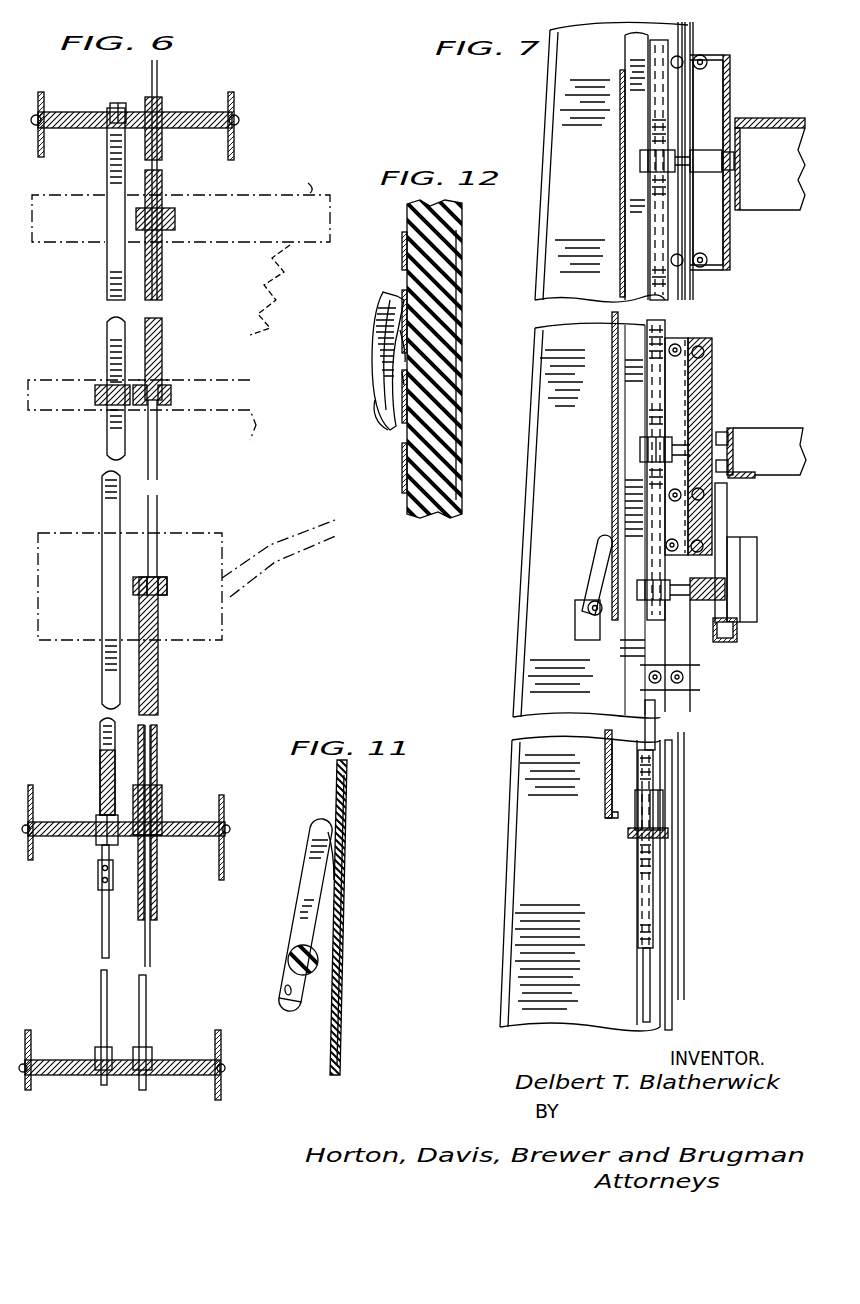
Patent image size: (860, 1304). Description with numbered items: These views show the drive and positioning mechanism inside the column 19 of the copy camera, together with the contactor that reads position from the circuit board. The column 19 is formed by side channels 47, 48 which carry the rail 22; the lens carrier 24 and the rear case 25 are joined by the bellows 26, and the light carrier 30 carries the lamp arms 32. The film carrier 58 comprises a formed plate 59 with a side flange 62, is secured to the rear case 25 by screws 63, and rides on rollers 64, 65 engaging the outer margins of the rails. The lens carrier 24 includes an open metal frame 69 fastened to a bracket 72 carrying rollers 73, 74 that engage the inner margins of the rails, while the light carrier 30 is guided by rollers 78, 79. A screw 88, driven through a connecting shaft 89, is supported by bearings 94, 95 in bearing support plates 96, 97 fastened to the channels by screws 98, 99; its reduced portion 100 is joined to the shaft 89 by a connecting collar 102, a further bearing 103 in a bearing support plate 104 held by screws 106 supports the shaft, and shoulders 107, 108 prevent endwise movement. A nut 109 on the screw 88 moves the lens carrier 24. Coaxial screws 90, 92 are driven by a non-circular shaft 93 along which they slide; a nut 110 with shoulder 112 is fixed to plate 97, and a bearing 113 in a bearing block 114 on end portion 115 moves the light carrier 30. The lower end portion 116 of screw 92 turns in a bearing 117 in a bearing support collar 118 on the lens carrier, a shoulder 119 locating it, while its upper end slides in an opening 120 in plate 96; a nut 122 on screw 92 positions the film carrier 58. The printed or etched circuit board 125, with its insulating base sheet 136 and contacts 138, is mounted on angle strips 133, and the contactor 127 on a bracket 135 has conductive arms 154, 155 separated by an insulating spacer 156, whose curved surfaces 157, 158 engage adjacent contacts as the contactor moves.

In FIG. 7, the column 19 is at (680, 945).
In FIG. 7, the rail 22 is at (692, 40).
In FIG. 6, the lens carrier 24 is at (155, 412).
In FIG. 7, the lens carrier 24 is at (733, 410).
In FIG. 6, the rear case 25 is at (181, 207).
In FIG. 7, the rear case 25 is at (772, 118).
In FIG. 6, the bellows 26 is at (282, 290).
In FIG. 6, the light carrier 30 is at (230, 603).
In FIG. 7, the light carrier 30 is at (705, 662).
In FIG. 6, the arms 32 is at (325, 528).
In FIG. 7, the arms 32 is at (758, 592).
In FIG. 6, the side channel 47 is at (236, 100).
In FIG. 7, the side channel 47 is at (532, 778).
In FIG. 6, the side channel 48 is at (44, 100).
In FIG. 7, the film carrier 58 is at (732, 238).
In FIG. 7, the formed plate 59 is at (732, 90).
In FIG. 7, the side flange 62 is at (707, 245).
In FIG. 7, the screws 63 is at (736, 163).
In FIG. 7, the rollers 64 is at (708, 60).
In FIG. 7, the rollers 65 is at (695, 285).
In FIG. 7, the open metal frame 69 is at (780, 440).
In FIG. 7, the bracket 72 is at (710, 365).
In FIG. 7, the rollers 73 is at (700, 345).
In FIG. 7, the rollers 74 is at (690, 322).
In FIG. 7, the rollers 78 is at (680, 700).
In FIG. 7, the rollers 79 is at (684, 677).
In FIG. 6, the screw 88 is at (104, 488).
In FIG. 6, the connecting shaft 89 is at (101, 980).
In FIG. 6, the screw 90 is at (158, 745).
In FIG. 7, the screw 90 is at (638, 908).
In FIG. 6, the screw 92 is at (163, 265).
In FIG. 7, the screw 92 is at (650, 212).
In FIG. 6, the shaft 93 is at (148, 985).
In FIG. 7, the shaft 93 is at (643, 993).
In FIG. 6, the bearing 94 is at (112, 106).
In FIG. 6, the bearing 95 is at (97, 822).
In FIG. 6, the bearing support plate 96 is at (182, 118).
In FIG. 6, the bearing support plate 97 is at (60, 822).
In FIG. 7, the bearing support plate 97 is at (636, 830).
In FIG. 6, the screws 98 is at (36, 116).
In FIG. 6, the screws 99 is at (30, 800).
In FIG. 6, the portion of reduced section 100 is at (102, 851).
In FIG. 6, the connecting collar 102 is at (98, 880).
In FIG. 6, the bearing 103 is at (112, 1050).
In FIG. 6, the bearing support plate 104 is at (62, 1060).
In FIG. 6, the screws 106 is at (225, 1066).
In FIG. 6, the shoulder 107 is at (108, 140).
In FIG. 6, the shoulder 108 is at (100, 790).
In FIG. 6, the nut 109 is at (96, 400).
In FIG. 7, the nut 109 is at (640, 450).
In FIG. 6, the nut 110 is at (163, 795).
In FIG. 7, the nut 110 is at (636, 812).
In FIG. 6, the shoulder 112 is at (163, 833).
In FIG. 6, the bearing 113 is at (152, 580).
In FIG. 6, the bearing block 114 is at (168, 588).
In FIG. 7, the bearing block 114 is at (638, 600).
In FIG. 6, the end portion 115 is at (167, 596).
In FIG. 6, the lower end portion 116 is at (160, 405).
In FIG. 6, the bearing 117 is at (172, 400).
In FIG. 6, the bearing support collar 118 is at (166, 388).
In FIG. 6, the shoulder 119 is at (162, 384).
In FIG. 6, the opening 120 is at (160, 110).
In FIG. 6, the nut 122 is at (176, 220).
In FIG. 7, the nut 122 is at (640, 162).
In FIG. 12, the printed or etched circuit board 125 is at (471, 424).
In FIG. 11, the printed or etched circuit board 125 is at (354, 964).
In FIG. 7, the printed or etched circuit board 125 is at (596, 799).
In FIG. 12, the contactor 127 is at (374, 406).
In FIG. 11, the contactor 127 is at (285, 933).
In FIG. 7, the contactor 127 is at (592, 566).
In FIG. 7, the angle strips 133 is at (622, 52).
In FIG. 7, the bracket 135 is at (578, 628).
In FIG. 12, the base sheet 136 is at (448, 268).
In FIG. 11, the base sheet 136 is at (343, 877).
In FIG. 12, the contacts 138 is at (402, 250).
In FIG. 12, the conductive arm 154 is at (378, 315).
In FIG. 11, the conductive arm 154 is at (308, 893).
In FIG. 12, the conductive arm 155 is at (386, 352).
In FIG. 11, the insulating spacer 156 is at (314, 978).
In FIG. 12, the curved surface 157 is at (405, 352).
In FIG. 11, the curved surface 157 is at (340, 846).
In FIG. 12, the curved surface 158 is at (408, 380).